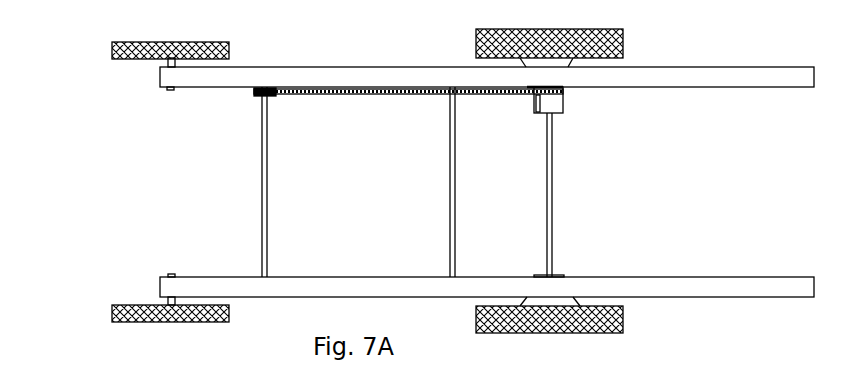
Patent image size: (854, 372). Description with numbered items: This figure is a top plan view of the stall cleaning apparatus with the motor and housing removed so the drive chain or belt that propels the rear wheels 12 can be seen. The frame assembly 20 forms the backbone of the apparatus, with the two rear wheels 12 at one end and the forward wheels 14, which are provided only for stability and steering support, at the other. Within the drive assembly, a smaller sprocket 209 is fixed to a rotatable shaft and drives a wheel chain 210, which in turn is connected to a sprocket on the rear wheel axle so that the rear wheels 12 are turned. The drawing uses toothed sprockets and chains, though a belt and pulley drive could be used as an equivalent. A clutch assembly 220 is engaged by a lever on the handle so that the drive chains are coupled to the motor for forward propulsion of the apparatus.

The rear wheels 12 is at (623, 33).
The forward wheels 14 is at (112, 313).
The frame assembly 20 is at (737, 87).
The smaller sprocket 209 is at (255, 93).
The wheel chain 210 is at (408, 93).
The clutch assembly 220 is at (558, 110).